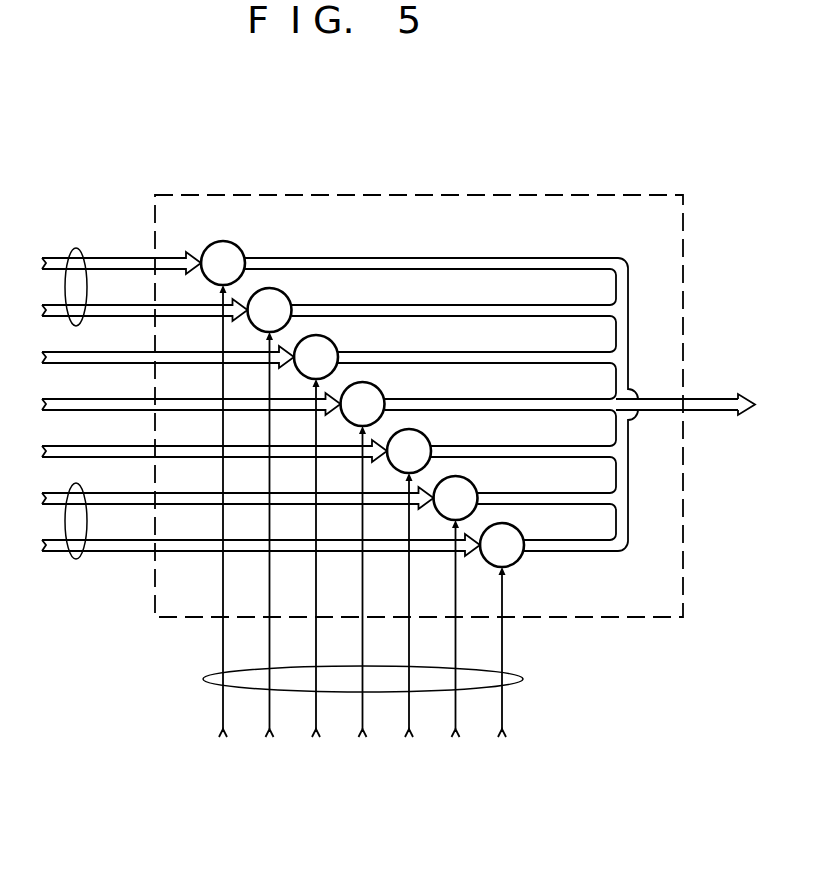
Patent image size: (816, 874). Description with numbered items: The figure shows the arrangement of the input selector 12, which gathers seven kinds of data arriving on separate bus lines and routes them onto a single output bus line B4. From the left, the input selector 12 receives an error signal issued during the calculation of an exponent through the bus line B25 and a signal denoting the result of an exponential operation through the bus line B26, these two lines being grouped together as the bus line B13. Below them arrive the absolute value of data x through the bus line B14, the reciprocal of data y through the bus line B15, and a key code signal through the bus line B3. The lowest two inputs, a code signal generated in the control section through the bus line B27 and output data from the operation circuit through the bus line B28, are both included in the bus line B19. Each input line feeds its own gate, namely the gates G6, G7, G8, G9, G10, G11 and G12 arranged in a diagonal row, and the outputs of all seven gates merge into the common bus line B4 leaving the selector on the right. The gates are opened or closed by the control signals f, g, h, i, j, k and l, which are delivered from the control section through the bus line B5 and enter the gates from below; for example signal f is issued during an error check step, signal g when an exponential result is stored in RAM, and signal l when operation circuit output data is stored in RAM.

The input selector 12 is at (606, 195).
The bus line B4 is at (712, 399).
The bus line B5 is at (523, 679).
The bus line B13 is at (75, 248).
The bus line B19 is at (76, 559).
The bus line B25 is at (98, 258).
The bus line B26 is at (98, 305).
The bus line B14 is at (98, 352).
The bus line B15 is at (98, 399).
The bus line B3 is at (98, 446).
The bus line B27 is at (98, 493).
The bus line B28 is at (98, 540).
The gate G6 is at (223, 263).
The gate G7 is at (270, 310).
The gate G8 is at (316, 357).
The gate G9 is at (363, 404).
The gate G10 is at (409, 451).
The gate G11 is at (456, 498).
The gate G12 is at (502, 545).